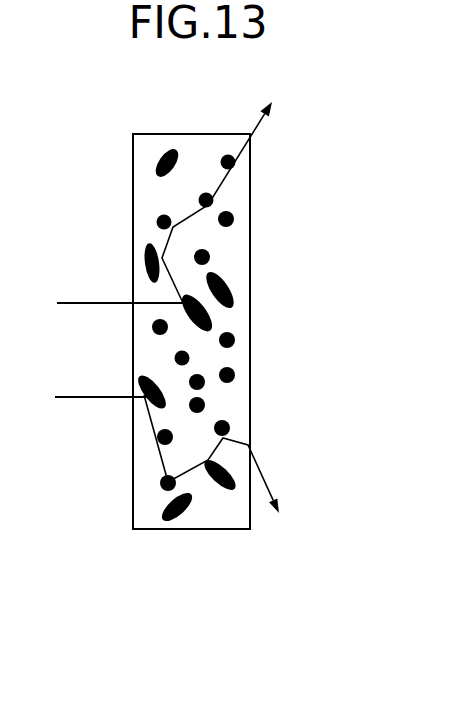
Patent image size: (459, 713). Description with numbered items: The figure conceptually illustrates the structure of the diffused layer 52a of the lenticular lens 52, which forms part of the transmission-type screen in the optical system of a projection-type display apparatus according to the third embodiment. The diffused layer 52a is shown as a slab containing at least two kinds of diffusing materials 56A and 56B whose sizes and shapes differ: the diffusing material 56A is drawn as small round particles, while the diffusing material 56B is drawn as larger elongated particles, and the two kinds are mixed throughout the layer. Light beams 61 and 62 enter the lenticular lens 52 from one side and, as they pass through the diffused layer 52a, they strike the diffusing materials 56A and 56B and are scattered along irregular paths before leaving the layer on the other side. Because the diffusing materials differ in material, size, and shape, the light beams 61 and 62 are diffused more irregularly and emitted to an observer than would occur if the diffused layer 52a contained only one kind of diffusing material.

The lenticular lens 52 is at (250, 120).
The diffused layer 52a is at (200, 515).
The diffusing material 56A is at (233, 218).
The diffusing material 56B is at (233, 290).
The light beam 61 is at (93, 302).
The light beam 62 is at (87, 398).